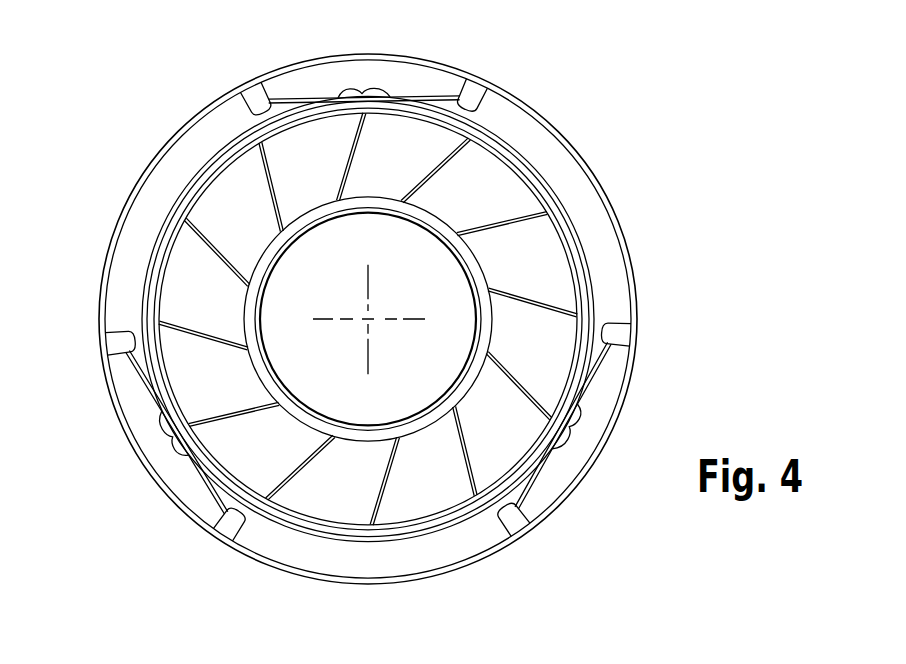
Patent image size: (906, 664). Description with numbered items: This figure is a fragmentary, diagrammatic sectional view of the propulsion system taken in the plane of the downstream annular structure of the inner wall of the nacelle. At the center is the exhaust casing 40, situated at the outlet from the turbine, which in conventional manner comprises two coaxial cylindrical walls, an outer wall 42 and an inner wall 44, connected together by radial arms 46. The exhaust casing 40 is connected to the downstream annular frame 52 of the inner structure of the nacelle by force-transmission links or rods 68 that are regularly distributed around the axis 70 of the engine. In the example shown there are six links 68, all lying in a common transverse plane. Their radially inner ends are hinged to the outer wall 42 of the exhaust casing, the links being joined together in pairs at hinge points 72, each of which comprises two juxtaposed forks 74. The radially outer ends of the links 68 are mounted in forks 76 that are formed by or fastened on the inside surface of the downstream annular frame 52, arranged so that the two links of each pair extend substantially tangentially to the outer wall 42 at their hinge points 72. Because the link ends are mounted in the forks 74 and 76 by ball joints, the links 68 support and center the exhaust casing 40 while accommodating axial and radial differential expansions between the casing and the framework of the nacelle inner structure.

The exhaust casing 40 is at (576, 223).
The outer wall 42 is at (590, 260).
The inner wall 44 is at (282, 252).
The radial arms 46 is at (256, 333).
The downstream frame 52 is at (533, 108).
The links 68 is at (305, 94).
The axis 70 is at (372, 320).
The hinge points 72 is at (376, 88).
The forks 74 is at (177, 448).
The forks 76 is at (622, 347).